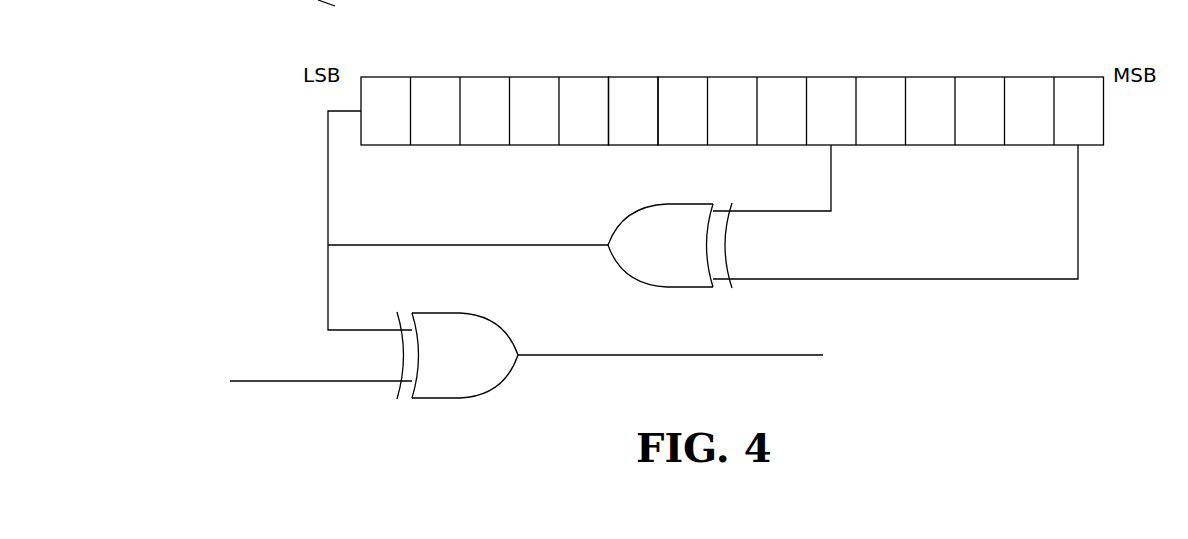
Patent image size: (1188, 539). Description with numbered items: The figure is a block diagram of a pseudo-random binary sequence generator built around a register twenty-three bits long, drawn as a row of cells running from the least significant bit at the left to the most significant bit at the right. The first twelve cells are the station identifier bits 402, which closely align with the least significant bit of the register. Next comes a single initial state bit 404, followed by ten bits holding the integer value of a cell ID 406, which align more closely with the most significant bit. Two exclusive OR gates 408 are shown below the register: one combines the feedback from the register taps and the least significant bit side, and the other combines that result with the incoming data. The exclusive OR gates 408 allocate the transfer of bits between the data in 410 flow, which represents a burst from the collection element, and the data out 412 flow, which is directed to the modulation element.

The station identifier bits 402 is at (608, 68).
The initial state bit 404 is at (638, 85).
The cell ID bits 406 is at (1103, 68).
The exclusive OR gates 408 is at (564, 301).
The data in 410 is at (321, 410).
The data out 412 is at (670, 383).